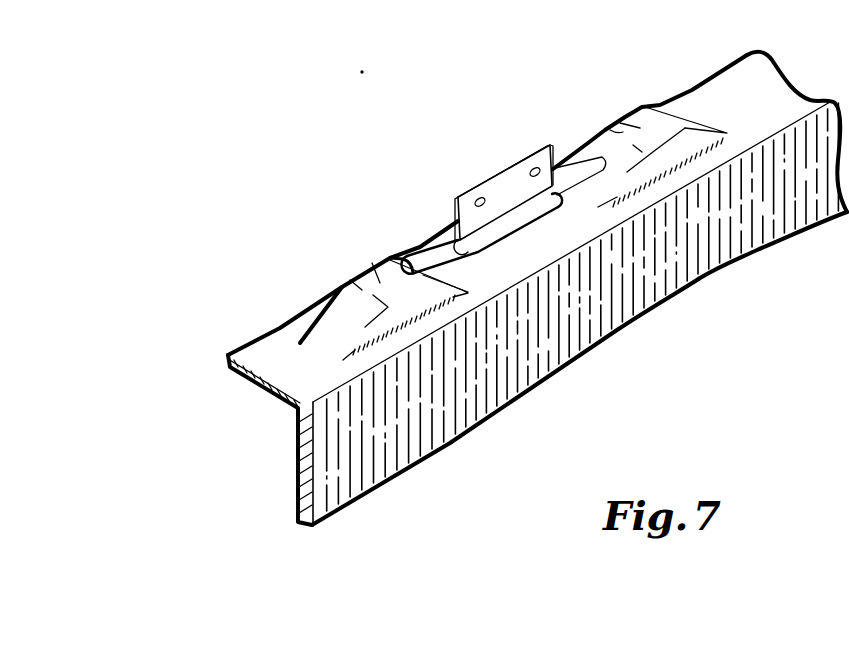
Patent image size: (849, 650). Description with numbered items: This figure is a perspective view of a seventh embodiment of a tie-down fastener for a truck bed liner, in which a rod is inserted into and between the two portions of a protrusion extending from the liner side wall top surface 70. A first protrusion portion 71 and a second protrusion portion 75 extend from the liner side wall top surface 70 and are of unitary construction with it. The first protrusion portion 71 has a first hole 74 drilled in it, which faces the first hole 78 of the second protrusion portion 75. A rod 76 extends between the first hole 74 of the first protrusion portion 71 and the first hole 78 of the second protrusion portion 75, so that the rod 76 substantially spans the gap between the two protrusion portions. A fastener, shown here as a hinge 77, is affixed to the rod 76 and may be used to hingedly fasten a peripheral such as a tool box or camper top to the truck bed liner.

The liner side wall top surface 70 is at (738, 90).
The first protrusion portion 71 is at (368, 263).
The first hole 74 is at (413, 253).
The second protrusion portion 75 is at (640, 125).
The rod 76 is at (442, 260).
The hinge 77 is at (507, 187).
The first hole 78 is at (585, 150).